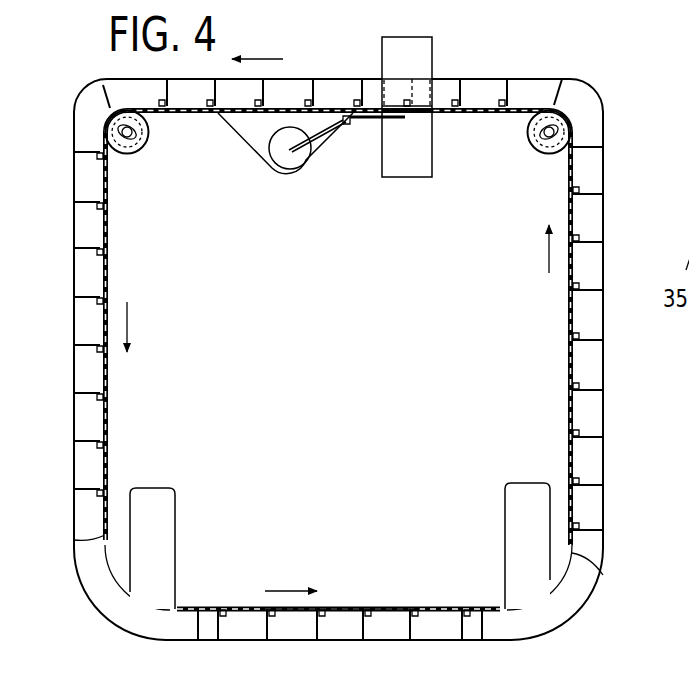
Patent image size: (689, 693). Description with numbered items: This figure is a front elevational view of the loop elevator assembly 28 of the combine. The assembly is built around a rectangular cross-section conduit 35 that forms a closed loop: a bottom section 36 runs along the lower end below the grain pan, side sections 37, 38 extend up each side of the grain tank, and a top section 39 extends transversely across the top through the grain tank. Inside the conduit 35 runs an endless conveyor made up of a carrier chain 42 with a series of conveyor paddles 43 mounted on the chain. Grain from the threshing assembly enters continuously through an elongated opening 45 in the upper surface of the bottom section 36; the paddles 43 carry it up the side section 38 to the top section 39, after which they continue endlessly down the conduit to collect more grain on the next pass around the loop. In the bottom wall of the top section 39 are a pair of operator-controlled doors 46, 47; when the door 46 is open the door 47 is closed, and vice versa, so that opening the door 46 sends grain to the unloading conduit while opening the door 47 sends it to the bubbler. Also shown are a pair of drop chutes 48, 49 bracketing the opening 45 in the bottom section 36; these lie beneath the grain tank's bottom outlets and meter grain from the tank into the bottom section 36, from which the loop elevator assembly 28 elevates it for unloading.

The loop elevator assembly 28 is at (92, 84).
The conduit 35 is at (71, 321).
The bottom section 36 is at (240, 641).
The side section 37 is at (74, 232).
The side section 38 is at (570, 313).
The top section 39 is at (332, 78).
The carrier chain 42 is at (477, 105).
The conveyor paddles 43 is at (512, 85).
The elongated opening 45 is at (393, 607).
The door 46 is at (320, 137).
The door 47 is at (370, 122).
The drop chute 48 is at (176, 523).
The drop chute 49 is at (505, 520).